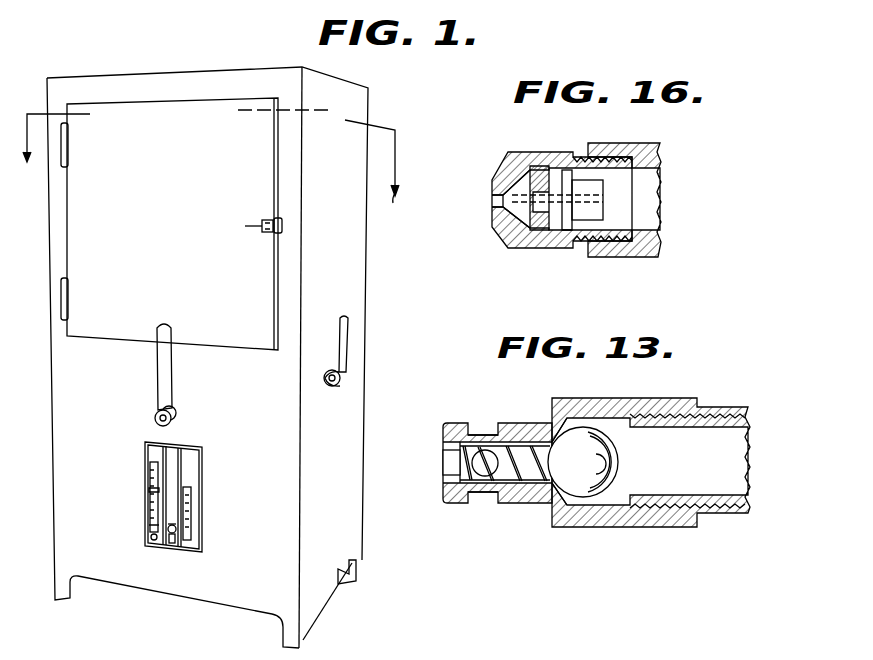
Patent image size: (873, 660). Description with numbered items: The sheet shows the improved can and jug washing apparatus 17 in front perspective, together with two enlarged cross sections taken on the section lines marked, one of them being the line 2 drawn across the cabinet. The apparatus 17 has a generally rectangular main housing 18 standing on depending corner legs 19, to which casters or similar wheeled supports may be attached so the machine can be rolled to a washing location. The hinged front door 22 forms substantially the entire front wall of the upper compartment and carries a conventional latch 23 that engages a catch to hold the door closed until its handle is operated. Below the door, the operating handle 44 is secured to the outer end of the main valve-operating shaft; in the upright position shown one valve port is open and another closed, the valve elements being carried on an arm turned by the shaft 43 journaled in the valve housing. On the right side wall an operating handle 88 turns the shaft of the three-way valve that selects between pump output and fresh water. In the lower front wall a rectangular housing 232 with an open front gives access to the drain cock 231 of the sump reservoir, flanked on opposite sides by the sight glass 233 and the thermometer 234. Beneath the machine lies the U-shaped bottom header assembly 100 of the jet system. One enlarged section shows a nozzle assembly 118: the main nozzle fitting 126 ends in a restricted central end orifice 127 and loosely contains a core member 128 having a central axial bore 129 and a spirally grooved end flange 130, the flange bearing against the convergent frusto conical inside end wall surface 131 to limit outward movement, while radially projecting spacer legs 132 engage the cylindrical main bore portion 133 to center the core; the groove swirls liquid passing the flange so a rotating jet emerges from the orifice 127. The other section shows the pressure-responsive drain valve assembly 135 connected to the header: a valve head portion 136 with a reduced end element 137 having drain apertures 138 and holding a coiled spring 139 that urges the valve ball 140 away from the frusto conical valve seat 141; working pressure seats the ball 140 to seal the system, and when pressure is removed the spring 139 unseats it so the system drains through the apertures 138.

In FIG. 1, the section line 2— 2 is at (210, 156).
In FIG. 1, the apparatus 17 is at (367, 304).
In FIG. 1, the main housing 18 is at (58, 452).
In FIG. 1, the corner legs 19 is at (300, 640).
In FIG. 1, the front door 22 is at (242, 333).
In FIG. 1, the latch 23 is at (262, 218).
In FIG. 1, the shaft 43 is at (157, 422).
In FIG. 1, the operating handle 44 is at (172, 380).
In FIG. 1, the operating handle 88 is at (341, 314).
In FIG. 1, the U-shaped bottom header assembly 100 is at (429, 651).
In FIG. 1, the drain cock 231 is at (170, 547).
In FIG. 1, the rectangular housing 232 is at (192, 463).
In FIG. 1, the sight glass 233 is at (150, 498).
In FIG. 1, the thermometer 234 is at (192, 510).
In FIG. 16, the valve assembly 118 is at (563, 257).
In FIG. 16, the main nozzle fitting 126 is at (562, 153).
In FIG. 16, the end orifice 127 is at (502, 200).
In FIG. 16, the core member 128 is at (587, 183).
In FIG. 16, the central axial bore 129 is at (597, 198).
In FIG. 16, the spirally grooved end flange 130 is at (540, 173).
In FIG. 16, the frusto conical inside end wall surface 131 is at (522, 187).
In FIG. 16, the spacer legs 132 is at (566, 230).
In FIG. 16, the cylindrical main bore portion 133 is at (623, 227).
In FIG. 13, the pressure-responsive drain valve assembly 135 is at (630, 540).
In FIG. 13, the valve head portion 136 is at (633, 400).
In FIG. 13, the reduced end element 137 is at (520, 504).
In FIG. 13, the drain apertures 138 is at (482, 432).
In FIG. 13, the coiled spring 139 is at (515, 445).
In FIG. 13, the valve ball 140 is at (603, 461).
In FIG. 13, the frusto conical valve seat 141 is at (564, 422).